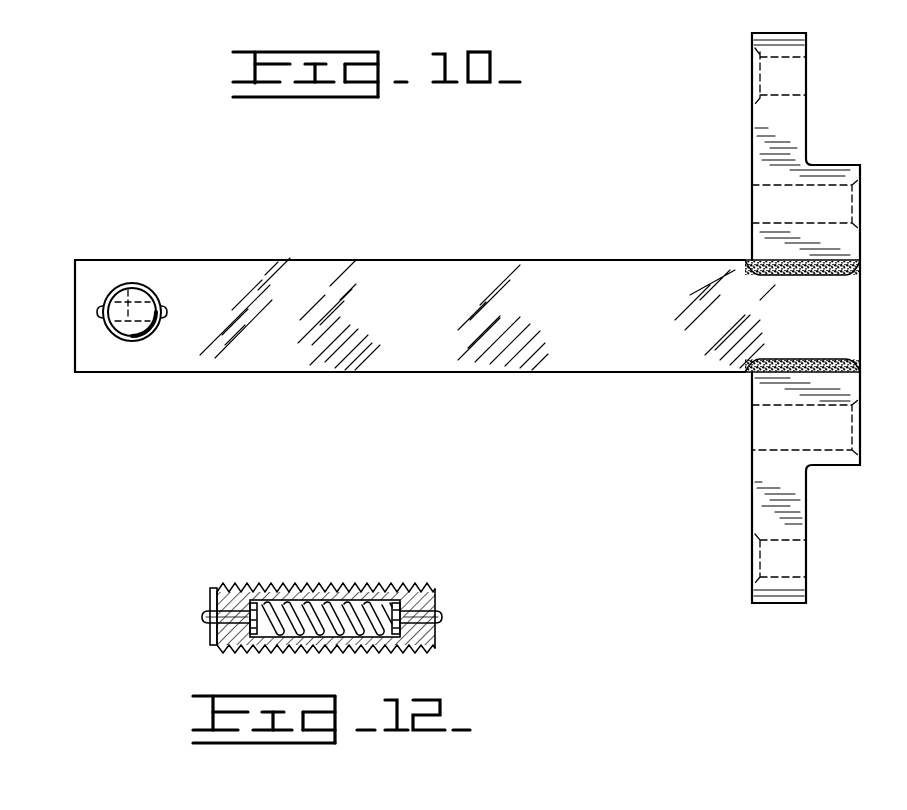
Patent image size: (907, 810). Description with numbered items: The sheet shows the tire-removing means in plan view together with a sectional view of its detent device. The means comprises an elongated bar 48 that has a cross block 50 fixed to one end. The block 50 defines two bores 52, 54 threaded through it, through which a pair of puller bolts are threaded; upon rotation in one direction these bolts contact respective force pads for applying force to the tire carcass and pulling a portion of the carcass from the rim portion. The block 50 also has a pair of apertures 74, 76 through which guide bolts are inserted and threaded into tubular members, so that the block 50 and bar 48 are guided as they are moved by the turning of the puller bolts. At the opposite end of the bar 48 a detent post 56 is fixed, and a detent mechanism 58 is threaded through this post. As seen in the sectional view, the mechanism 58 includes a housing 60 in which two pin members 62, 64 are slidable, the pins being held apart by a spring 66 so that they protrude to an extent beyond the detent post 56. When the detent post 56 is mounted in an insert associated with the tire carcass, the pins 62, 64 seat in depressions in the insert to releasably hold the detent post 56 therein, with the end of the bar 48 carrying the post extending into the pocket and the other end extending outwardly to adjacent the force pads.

In FIG. 10, the bar 48 is at (545, 325).
In FIG. 10, the cross block 50 is at (785, 513).
In FIG. 10, the bore 52 is at (780, 185).
In FIG. 10, the bore 54 is at (768, 420).
In FIG. 10, the detent post 56 is at (130, 340).
In FIG. 10, the detent mechanism 58 is at (105, 300).
In FIG. 12, the detent mechanism 58 is at (405, 568).
In FIG. 10, the housing 60 is at (128, 288).
In FIG. 12, the housing 60 is at (235, 648).
In FIG. 10, the pin member 62 is at (100, 313).
In FIG. 12, the pin member 62 is at (444, 617).
In FIG. 10, the pin member 64 is at (165, 305).
In FIG. 12, the pin member 64 is at (200, 618).
In FIG. 12, the spring 66 is at (300, 605).
In FIG. 10, the aperture 74 is at (760, 70).
In FIG. 10, the aperture 76 is at (752, 568).